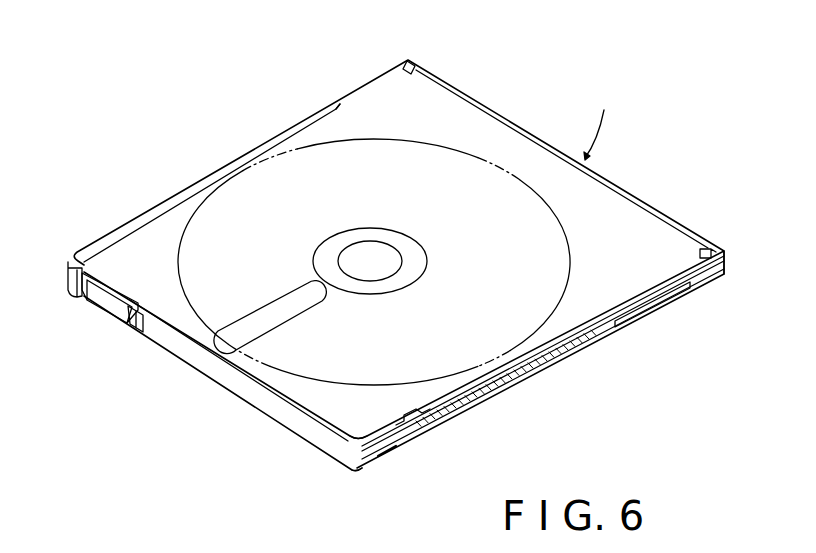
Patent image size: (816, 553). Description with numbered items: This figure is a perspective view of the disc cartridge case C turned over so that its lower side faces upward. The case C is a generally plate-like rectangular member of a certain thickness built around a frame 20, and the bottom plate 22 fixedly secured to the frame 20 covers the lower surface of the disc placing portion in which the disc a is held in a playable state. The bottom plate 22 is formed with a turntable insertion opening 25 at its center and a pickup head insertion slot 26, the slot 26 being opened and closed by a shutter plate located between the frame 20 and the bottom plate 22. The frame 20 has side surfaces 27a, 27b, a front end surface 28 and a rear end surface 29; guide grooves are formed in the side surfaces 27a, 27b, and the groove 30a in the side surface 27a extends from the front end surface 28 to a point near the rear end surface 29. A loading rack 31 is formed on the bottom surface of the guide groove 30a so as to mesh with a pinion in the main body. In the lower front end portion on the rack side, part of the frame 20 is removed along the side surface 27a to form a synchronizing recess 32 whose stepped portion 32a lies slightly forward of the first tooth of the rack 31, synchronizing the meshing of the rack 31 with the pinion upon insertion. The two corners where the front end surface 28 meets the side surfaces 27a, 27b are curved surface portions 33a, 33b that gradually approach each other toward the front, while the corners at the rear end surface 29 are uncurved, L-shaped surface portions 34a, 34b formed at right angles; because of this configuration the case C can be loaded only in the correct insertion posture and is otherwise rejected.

The frame 20 is at (700, 278).
The bottom plate 22 is at (490, 132).
The turntable insertion opening 25 is at (347, 233).
The pickup head insertion slot 26 is at (250, 316).
The side surface 27a is at (472, 399).
The side surface 27b is at (175, 187).
The front end surface 28 is at (263, 400).
The rear end surface 29 is at (647, 199).
The guide groove 30a is at (614, 331).
The loading rack 31 is at (530, 381).
The synchronizing recess 32 is at (388, 446).
The stepped portion 32a is at (404, 446).
The curved surface portion 33a is at (360, 461).
The curved surface portion 33b is at (68, 270).
The uncurved surface portion 34a is at (729, 256).
The uncurved surface portion 34b is at (411, 62).
The disc a is at (243, 168).
The disc cartridge case C is at (618, 108).